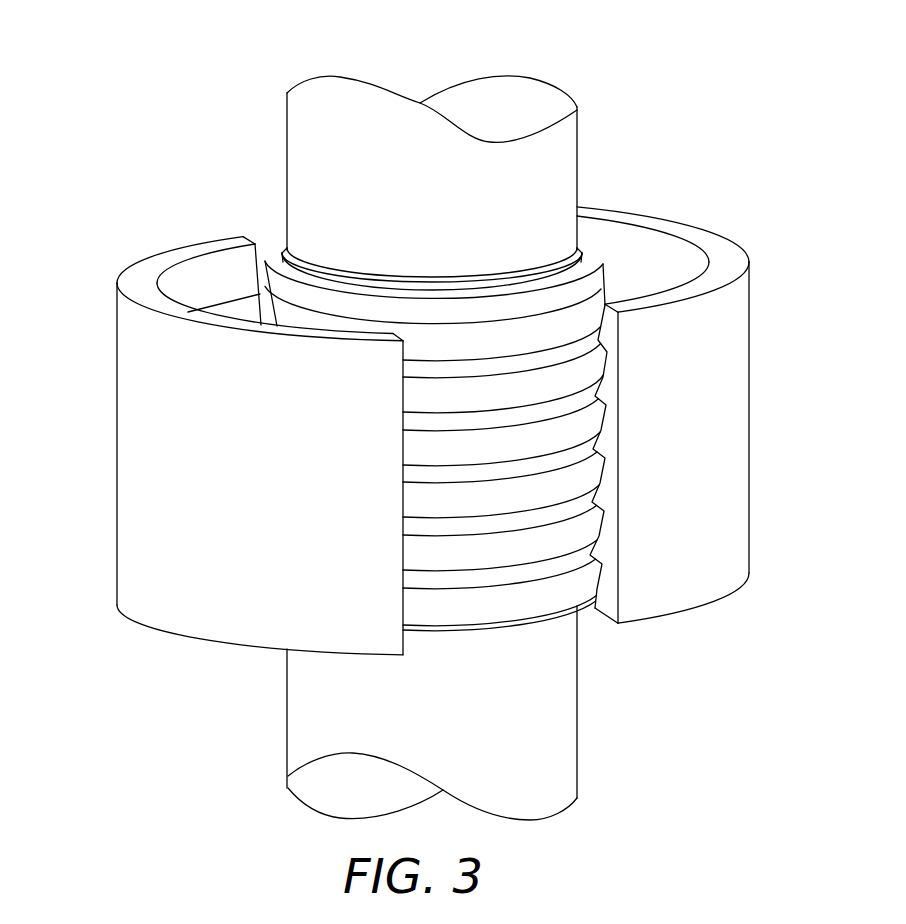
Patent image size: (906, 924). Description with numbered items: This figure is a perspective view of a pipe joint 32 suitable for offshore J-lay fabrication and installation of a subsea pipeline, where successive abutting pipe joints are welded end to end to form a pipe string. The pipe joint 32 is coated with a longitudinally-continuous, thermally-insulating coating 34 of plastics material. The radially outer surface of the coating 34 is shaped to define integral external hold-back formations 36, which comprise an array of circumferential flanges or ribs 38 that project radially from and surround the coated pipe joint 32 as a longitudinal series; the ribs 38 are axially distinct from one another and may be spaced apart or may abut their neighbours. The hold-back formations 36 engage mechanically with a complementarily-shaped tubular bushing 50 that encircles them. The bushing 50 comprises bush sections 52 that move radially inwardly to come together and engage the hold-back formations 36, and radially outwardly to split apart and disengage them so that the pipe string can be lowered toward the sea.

The pipe joint 32 is at (411, 448).
The thermally-insulating coating 34 is at (577, 137).
The hold-back formations 36 is at (585, 609).
The circumferential ribs 38 is at (593, 268).
The tubular bushing 50 is at (411, 443).
The bush sections 52 is at (433, 443).